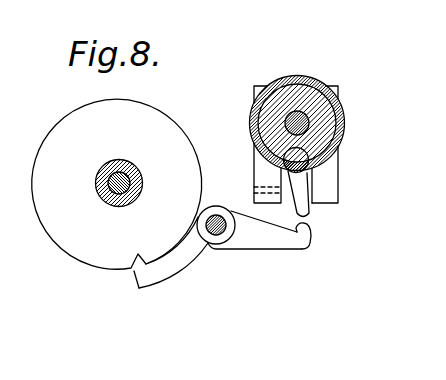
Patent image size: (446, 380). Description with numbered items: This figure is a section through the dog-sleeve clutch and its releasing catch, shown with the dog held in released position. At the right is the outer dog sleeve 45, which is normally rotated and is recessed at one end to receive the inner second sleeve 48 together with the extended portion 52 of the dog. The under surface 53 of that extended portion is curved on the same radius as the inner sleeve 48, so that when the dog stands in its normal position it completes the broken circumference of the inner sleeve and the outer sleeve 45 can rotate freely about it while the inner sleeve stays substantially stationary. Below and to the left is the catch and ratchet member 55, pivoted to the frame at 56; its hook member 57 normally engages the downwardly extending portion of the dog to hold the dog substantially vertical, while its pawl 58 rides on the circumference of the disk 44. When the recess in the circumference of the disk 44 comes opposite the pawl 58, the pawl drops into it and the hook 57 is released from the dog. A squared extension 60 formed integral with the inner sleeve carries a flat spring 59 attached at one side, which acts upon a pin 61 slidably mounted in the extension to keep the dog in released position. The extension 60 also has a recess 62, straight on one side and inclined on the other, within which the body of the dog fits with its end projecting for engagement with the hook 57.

The disk 44 is at (128, 239).
The sleeve 45 is at (297, 76).
The second sleeve 48 is at (262, 110).
The extended portion 52 is at (340, 143).
The under surface 53 is at (312, 177).
The catch and ratchet member 55 is at (269, 238).
The pivot 56 is at (220, 230).
The hook member 57 is at (311, 243).
The pawl 58 is at (148, 277).
The flat spring 59 is at (254, 165).
The squared extension 60 is at (326, 188).
The pin 61 is at (277, 191).
The recess 62 is at (294, 204).